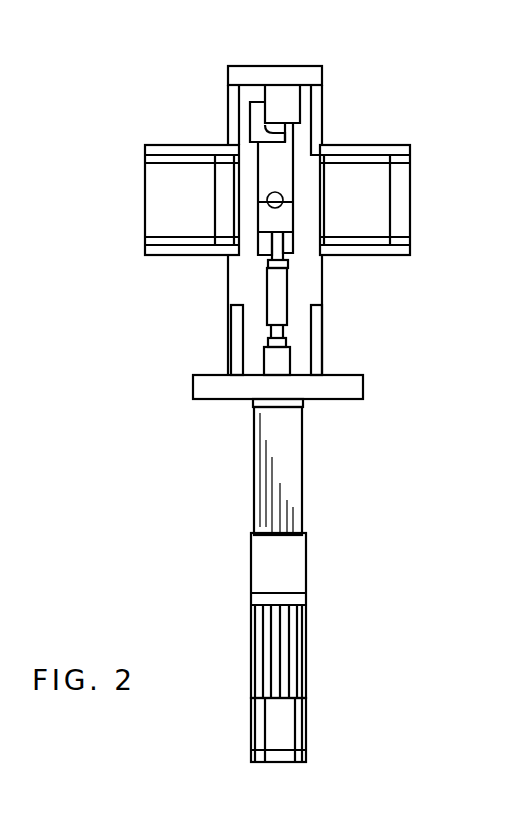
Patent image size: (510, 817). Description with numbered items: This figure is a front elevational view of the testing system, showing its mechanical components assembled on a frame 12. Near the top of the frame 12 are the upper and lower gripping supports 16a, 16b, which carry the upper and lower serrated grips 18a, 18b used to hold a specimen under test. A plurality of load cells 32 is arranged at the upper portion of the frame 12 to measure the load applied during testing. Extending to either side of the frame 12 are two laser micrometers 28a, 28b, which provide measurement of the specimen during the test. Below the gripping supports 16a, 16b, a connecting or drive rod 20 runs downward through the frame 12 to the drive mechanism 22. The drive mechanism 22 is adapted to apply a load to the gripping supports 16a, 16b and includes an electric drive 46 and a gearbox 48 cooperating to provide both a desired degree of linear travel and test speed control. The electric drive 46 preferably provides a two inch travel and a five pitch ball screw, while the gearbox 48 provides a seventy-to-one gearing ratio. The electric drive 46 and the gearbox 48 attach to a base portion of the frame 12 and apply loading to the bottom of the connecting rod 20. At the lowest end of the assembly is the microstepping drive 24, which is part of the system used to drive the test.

The frame 12 is at (255, 75).
The load cells 32 is at (293, 105).
The upper gripping support 16a is at (282, 152).
The lower gripping support 16b is at (258, 218).
The upper serrated grip 18a is at (287, 187).
The lower serrated grip 18b is at (265, 242).
The connecting rod 20 is at (278, 303).
The drive mechanism 22 is at (223, 511).
The microstepping drive 24 is at (278, 757).
The laser micrometer 28a is at (165, 175).
The laser micrometer 28b is at (380, 197).
The electric drive 46 is at (295, 568).
The gearbox 48 is at (292, 482).